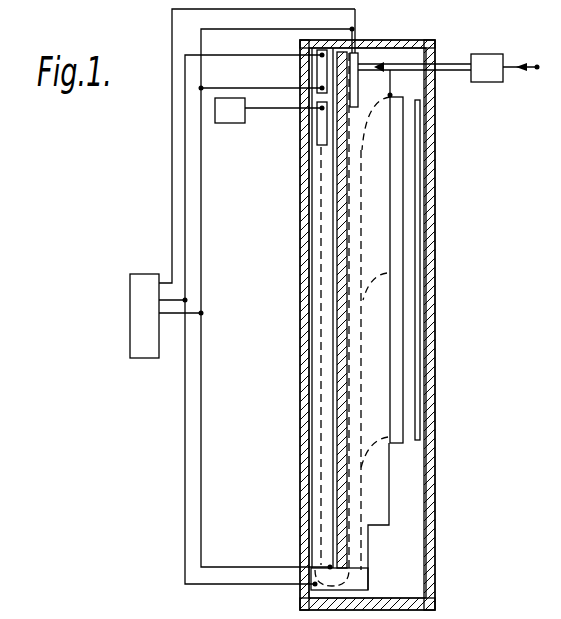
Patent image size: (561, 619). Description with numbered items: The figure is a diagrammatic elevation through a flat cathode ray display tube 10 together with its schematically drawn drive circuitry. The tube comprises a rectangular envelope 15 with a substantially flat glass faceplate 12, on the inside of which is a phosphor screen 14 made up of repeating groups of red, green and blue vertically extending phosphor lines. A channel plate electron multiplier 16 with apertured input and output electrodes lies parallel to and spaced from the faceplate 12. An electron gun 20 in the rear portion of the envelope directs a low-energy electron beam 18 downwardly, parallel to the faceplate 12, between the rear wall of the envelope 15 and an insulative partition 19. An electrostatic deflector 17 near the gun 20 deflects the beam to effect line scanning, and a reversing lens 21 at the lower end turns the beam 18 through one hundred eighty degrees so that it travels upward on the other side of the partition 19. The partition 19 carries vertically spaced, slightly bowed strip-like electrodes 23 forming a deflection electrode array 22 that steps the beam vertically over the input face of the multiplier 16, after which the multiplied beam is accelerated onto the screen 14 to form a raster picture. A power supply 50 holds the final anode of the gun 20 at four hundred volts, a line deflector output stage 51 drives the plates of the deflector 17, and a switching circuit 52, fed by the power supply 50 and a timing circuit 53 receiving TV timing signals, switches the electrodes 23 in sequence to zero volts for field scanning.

The apparatus housing 10 is at (436, 550).
The faceplate 12 is at (427, 145).
The phosphor screen 14 is at (420, 200).
The envelope 15 is at (305, 265).
The channel plate electron multiplier 16 is at (403, 340).
The electrostatic deflector 17 is at (317, 132).
The electron beam 18 is at (323, 371).
The partition 19 is at (346, 428).
The electron gun 20 is at (320, 70).
The reversing lens 21 is at (384, 576).
The deflection electrode array 22 is at (368, 538).
The strip-like electrodes 23 is at (346, 445).
The power supply 50 is at (242, 298).
The line deflector output stage 51 is at (268, 111).
The switching circuit 52 is at (353, 82).
The timing circuit 53 is at (449, 68).